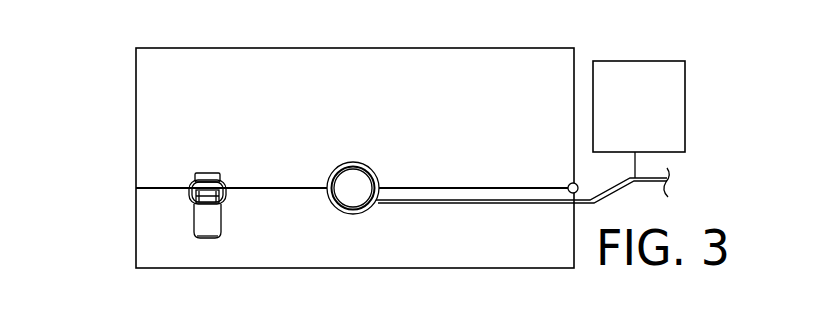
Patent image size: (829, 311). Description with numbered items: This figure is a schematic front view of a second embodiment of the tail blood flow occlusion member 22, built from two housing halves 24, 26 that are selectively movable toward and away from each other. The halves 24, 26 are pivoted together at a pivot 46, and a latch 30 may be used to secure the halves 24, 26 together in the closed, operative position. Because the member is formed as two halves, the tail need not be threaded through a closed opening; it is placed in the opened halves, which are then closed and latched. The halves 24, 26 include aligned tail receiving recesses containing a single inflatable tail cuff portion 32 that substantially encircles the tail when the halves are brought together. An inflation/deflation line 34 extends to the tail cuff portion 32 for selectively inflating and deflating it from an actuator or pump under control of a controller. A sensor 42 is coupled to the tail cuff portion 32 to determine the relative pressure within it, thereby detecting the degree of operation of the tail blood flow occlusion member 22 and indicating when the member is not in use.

The tail blood flow occlusion member 22 is at (122, 50).
The housing half 24 is at (445, 107).
The housing half 26 is at (445, 249).
The latch 30 is at (205, 222).
The inflatable tail cuff portion 32 is at (352, 162).
The inflation/deflation line 34 is at (612, 198).
The sensor 42 is at (651, 123).
The pivot 46 is at (575, 183).